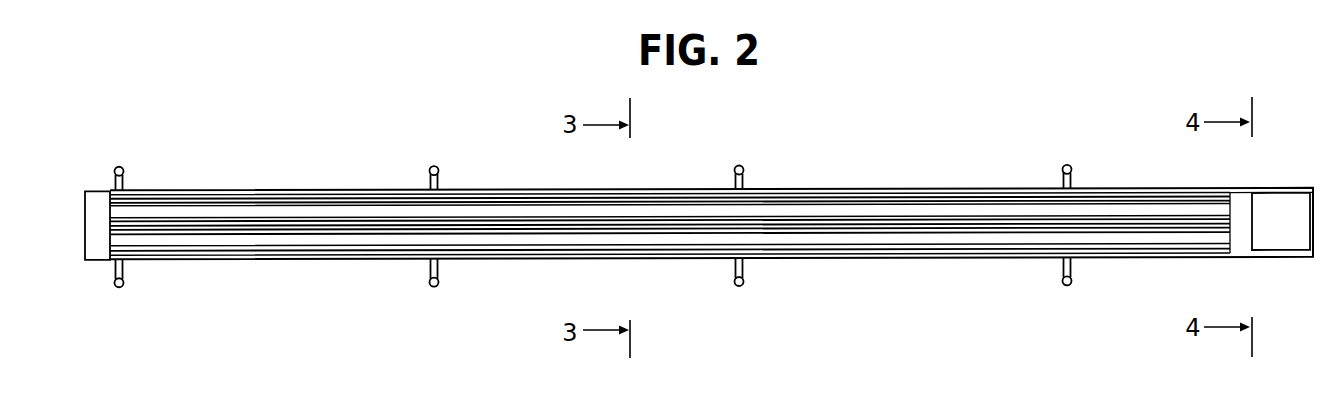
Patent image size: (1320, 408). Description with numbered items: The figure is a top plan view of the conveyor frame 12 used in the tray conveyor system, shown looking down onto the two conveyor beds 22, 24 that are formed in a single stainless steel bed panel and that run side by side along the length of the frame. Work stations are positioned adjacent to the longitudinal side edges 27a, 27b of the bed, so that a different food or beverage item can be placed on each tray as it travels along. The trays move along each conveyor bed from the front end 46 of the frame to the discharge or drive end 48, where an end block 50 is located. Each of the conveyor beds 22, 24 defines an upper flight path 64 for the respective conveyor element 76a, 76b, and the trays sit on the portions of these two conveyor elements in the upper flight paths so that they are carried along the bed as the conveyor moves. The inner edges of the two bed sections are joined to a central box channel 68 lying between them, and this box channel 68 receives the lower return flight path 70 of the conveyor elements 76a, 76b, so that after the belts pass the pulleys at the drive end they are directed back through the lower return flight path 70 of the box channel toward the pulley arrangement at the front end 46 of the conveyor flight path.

The conveyor frame 12 is at (1030, 258).
The conveyor bed 22 is at (670, 176).
The conveyor bed 24 is at (337, 254).
The longitudinal side edge 27a is at (193, 191).
The longitudinal side edge 27b is at (197, 259).
The front end 46 is at (85, 217).
The discharge or drive end 48 is at (1238, 187).
The end block 50 is at (1270, 197).
The upper flight path 64 is at (400, 203).
The central box channel 68 is at (1013, 216).
The lower return flight path 70 is at (943, 220).
The conveyor element 76a is at (279, 221).
The conveyor element 76b is at (288, 249).